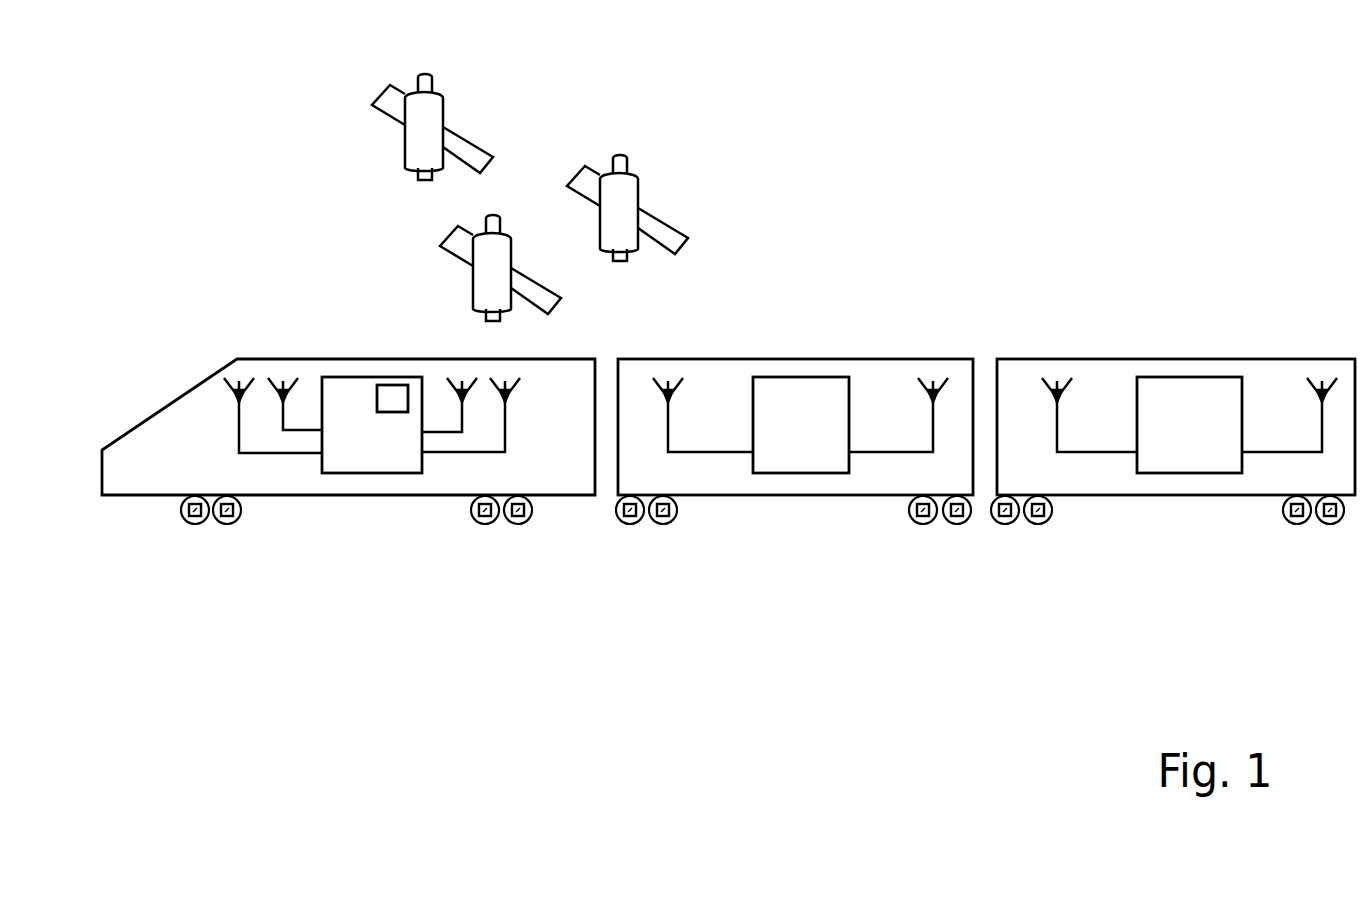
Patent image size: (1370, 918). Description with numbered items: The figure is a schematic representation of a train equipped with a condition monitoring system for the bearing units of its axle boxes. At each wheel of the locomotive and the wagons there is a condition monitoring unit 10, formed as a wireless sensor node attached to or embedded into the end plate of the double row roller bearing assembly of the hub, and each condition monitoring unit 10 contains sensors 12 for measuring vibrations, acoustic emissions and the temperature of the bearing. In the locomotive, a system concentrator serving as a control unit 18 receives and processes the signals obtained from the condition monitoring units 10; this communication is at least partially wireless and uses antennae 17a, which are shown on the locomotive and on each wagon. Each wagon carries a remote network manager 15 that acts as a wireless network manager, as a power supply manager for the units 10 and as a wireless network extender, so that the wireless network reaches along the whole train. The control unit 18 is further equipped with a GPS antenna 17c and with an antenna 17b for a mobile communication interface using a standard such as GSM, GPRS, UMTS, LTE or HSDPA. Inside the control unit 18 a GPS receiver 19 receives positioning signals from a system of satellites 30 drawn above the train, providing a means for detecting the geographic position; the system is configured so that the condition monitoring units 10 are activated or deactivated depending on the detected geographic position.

The condition monitoring unit 10 is at (183, 517).
The sensor 12 is at (187, 520).
The remote network manager 15 is at (818, 457).
The antenna 17a is at (282, 393).
The antenna for a mobile communication interface 17b is at (232, 368).
The GPS antenna 17c is at (512, 380).
The control unit 18 is at (363, 452).
The GPS receiver 19 is at (383, 395).
The satellite 30 is at (477, 245).